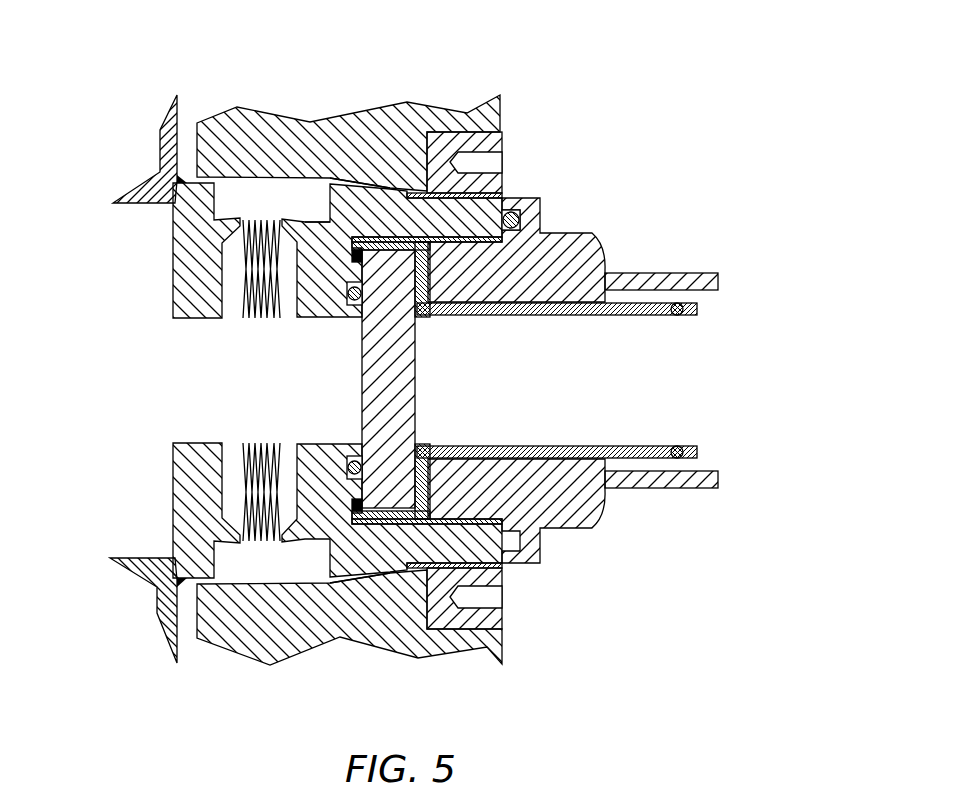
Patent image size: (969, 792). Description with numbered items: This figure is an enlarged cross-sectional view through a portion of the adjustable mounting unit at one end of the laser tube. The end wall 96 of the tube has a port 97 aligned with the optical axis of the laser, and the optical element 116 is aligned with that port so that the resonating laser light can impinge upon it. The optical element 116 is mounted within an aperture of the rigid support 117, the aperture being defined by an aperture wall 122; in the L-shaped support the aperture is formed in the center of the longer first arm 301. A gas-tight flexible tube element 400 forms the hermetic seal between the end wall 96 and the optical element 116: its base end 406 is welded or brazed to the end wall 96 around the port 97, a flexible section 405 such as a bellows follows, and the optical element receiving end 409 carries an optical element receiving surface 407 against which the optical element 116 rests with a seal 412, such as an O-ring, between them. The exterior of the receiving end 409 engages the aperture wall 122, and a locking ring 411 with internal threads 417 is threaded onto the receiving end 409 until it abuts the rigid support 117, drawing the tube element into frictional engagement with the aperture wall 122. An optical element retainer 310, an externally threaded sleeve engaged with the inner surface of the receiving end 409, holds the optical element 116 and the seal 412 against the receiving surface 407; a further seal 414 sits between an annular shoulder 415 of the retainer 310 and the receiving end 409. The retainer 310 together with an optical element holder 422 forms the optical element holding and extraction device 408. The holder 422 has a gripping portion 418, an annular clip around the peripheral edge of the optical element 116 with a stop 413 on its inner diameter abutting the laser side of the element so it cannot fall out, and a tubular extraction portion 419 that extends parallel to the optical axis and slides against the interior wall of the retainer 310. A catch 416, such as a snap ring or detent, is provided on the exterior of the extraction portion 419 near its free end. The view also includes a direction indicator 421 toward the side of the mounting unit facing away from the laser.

The end wall 96 is at (167, 620).
The port 97 is at (103, 537).
The optical element 116 is at (392, 368).
The rigid support 117 is at (243, 637).
The aperture wall 122 is at (283, 572).
The first arm 301 is at (210, 150).
The optical element retainer 310 is at (552, 253).
The flexible tube element 400 is at (180, 333).
The flexible section 405 is at (245, 207).
The base end 406 is at (192, 463).
The optical element receiving surface 407 is at (305, 222).
The optical element holding and extraction device 408 is at (608, 532).
The optical element receiving end 409 is at (397, 215).
The locking ring 411 is at (467, 140).
The seal 412 is at (350, 458).
The stop 413 is at (350, 240).
The seal 414 is at (515, 210).
The annular shoulder 415 is at (540, 542).
The catch 416 is at (686, 315).
The internal threads 417 is at (445, 622).
The gripping portion 418 is at (437, 310).
The tubular extraction portion 419 is at (583, 444).
The direction indicator 421 is at (833, 346).
The optical element holder 422 is at (585, 290).